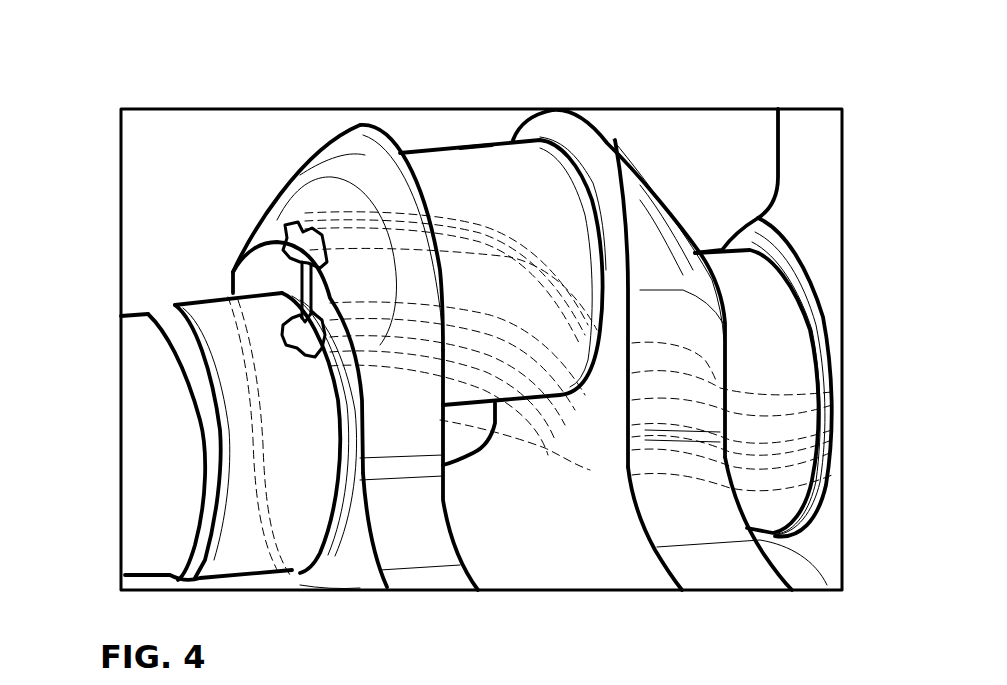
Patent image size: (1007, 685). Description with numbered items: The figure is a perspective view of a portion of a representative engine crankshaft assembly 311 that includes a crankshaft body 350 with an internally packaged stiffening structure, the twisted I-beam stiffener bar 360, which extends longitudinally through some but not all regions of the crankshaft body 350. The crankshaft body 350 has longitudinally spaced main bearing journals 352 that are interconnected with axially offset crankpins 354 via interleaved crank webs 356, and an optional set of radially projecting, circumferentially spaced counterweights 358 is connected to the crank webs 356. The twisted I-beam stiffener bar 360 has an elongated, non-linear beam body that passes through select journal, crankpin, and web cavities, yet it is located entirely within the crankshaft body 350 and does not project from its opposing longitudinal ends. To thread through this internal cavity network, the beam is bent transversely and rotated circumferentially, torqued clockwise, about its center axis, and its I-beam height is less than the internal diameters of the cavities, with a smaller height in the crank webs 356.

The engine crankshaft assembly 311 is at (803, 83).
The crankshaft body 350 is at (143, 315).
The main bearing journals 352 is at (203, 307).
The crankpins 354 is at (507, 152).
The crank webs 356 is at (342, 142).
The counterweights 358 is at (358, 575).
The twisted I-beam stiffener bar 360 is at (477, 167).